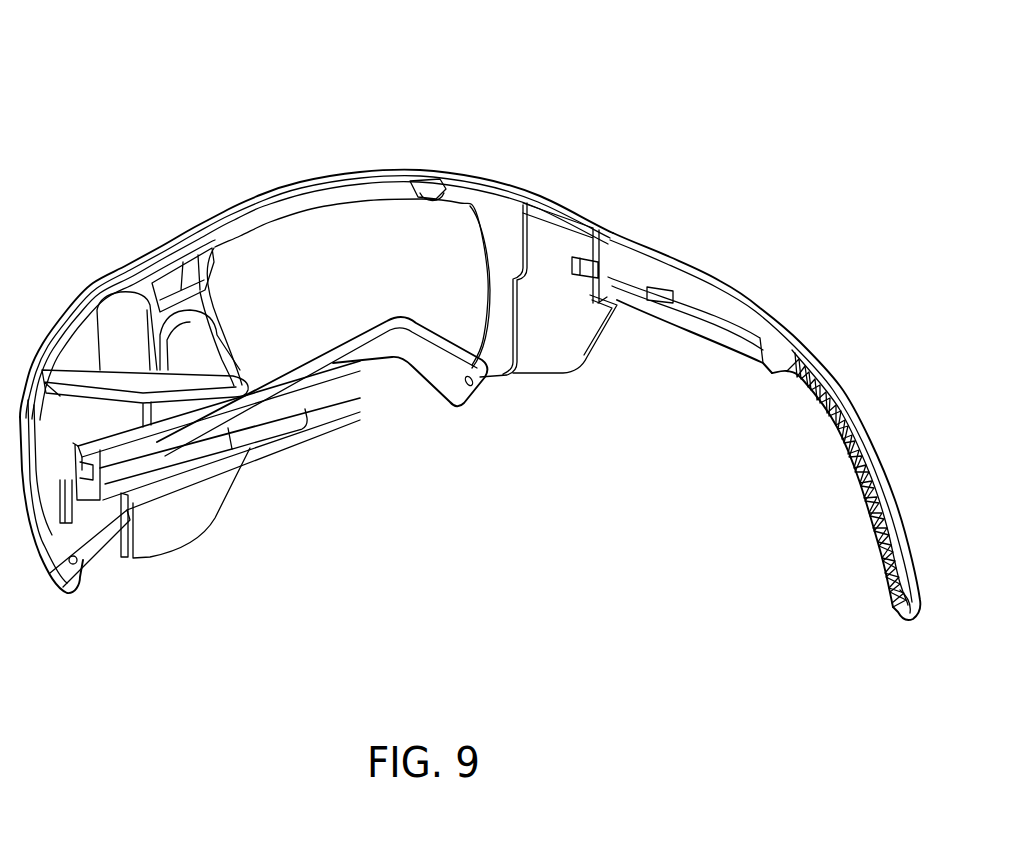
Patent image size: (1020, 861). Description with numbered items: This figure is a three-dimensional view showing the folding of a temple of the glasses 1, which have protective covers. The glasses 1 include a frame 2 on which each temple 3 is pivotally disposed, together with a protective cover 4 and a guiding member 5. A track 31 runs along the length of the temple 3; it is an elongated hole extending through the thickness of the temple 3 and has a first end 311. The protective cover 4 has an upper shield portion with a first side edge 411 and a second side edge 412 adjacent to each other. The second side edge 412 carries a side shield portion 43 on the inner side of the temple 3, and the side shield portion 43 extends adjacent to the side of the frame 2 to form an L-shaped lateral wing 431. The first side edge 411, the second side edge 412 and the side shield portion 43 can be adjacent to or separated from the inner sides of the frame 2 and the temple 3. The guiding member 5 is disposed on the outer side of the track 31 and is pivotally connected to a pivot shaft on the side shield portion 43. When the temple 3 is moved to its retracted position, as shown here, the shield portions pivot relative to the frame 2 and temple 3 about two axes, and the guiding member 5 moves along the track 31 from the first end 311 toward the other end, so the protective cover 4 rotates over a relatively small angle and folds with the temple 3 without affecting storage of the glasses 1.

The glasses 1 is at (150, 66).
The frame 2 is at (183, 232).
The temple 3 is at (372, 357).
The protective cover 4 is at (100, 368).
The first side edge 411 is at (52, 366).
The second side edge 412 is at (197, 387).
The guiding member 5 is at (267, 425).
The track 31 is at (170, 460).
The first end 311 is at (100, 490).
The side shield portion 43 is at (214, 496).
The L-shaped lateral wing 431 is at (122, 532).